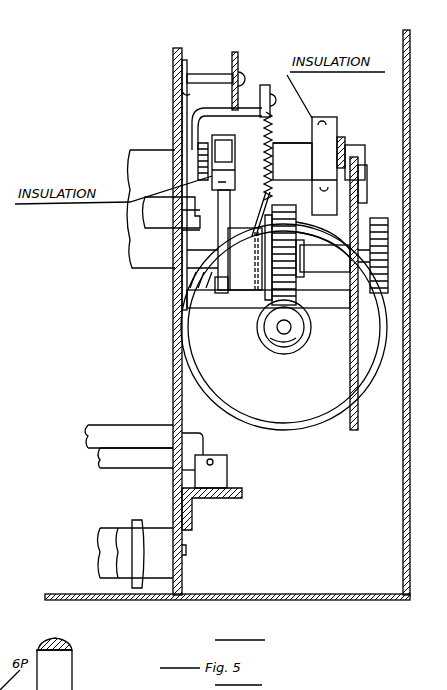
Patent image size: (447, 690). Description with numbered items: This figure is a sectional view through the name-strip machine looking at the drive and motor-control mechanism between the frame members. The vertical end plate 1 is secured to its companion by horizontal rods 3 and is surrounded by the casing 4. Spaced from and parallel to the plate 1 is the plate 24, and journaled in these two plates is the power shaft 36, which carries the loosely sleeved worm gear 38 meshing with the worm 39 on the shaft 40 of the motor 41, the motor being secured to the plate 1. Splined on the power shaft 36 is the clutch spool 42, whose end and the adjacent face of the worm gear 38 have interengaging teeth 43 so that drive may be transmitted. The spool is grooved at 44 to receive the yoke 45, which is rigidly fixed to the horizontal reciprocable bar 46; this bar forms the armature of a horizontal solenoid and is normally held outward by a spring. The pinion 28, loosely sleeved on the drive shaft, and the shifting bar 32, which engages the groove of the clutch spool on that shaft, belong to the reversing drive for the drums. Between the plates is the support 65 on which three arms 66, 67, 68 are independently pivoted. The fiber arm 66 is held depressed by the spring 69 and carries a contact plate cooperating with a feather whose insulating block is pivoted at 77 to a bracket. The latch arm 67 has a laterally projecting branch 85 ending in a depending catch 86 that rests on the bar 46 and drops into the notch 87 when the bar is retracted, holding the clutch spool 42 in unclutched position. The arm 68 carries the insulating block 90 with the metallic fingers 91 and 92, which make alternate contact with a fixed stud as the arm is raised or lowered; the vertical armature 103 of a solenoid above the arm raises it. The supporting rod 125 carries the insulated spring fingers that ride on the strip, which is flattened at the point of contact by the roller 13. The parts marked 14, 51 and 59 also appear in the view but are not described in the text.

The end plate 1 is at (173, 56).
The horizontal rod 3 is at (154, 462).
The casing 4 is at (410, 48).
The roller 13 is at (149, 532).
The shaft 14 is at (112, 528).
The plate 24 is at (358, 410).
The pinion 28 is at (222, 498).
The shifting bar 32 is at (380, 218).
The power shaft 36 is at (336, 258).
The worm gear 38 is at (286, 206).
The worm 39 is at (284, 340).
The motor shaft 40 is at (291, 325).
The motor 41 is at (292, 424).
The clutch spool 42 is at (247, 298).
The interengaging teeth 43 is at (246, 261).
The groove 44 is at (219, 294).
The yoke 45 is at (240, 240).
The reciprocable bar 46 is at (160, 222).
The bracket 51 is at (238, 58).
The bracket 59 is at (366, 190).
The support 65 is at (294, 148).
The arm 66 is at (234, 162).
The latch arm 67 is at (264, 128).
The arm 68 is at (341, 142).
The spring 69 is at (197, 160).
The pivot 77 is at (213, 462).
The laterally projecting branch 85 is at (224, 112).
The depending catch 86 is at (183, 140).
The notch 87 is at (205, 204).
The insulating block 90 is at (322, 150).
The metallic finger 91 is at (323, 117).
The metallic finger 92 is at (323, 234).
The armature 103 is at (72, 664).
The supporting rod 125 is at (145, 426).